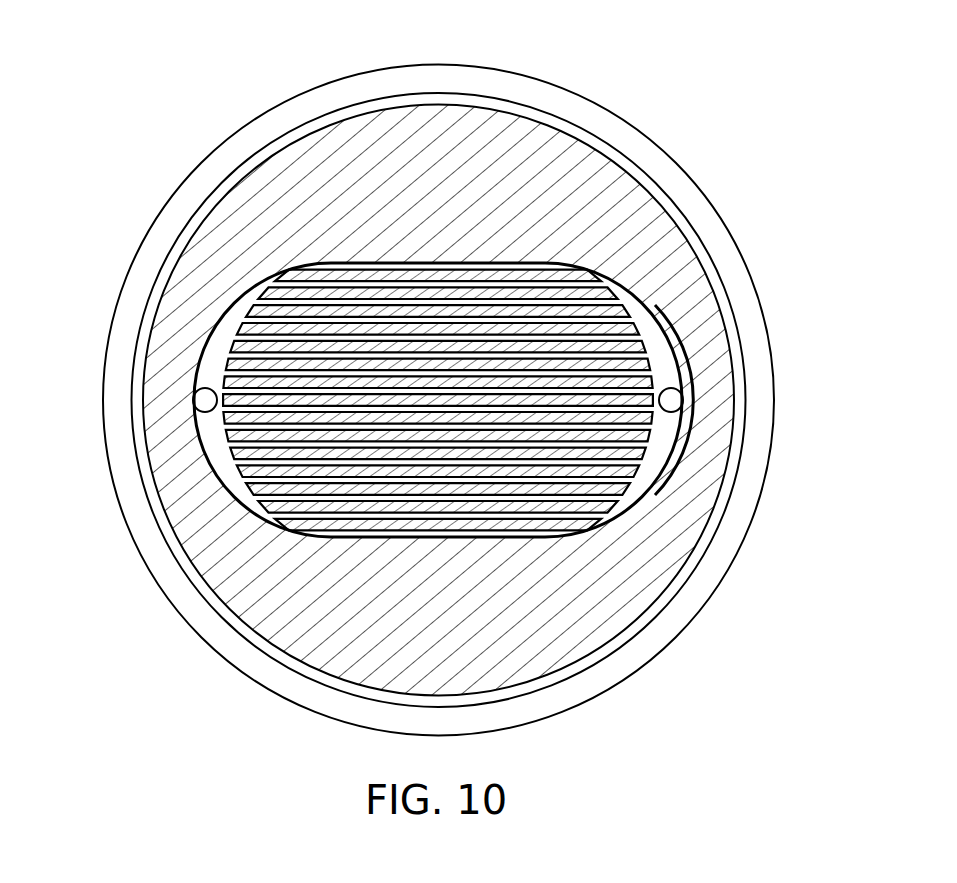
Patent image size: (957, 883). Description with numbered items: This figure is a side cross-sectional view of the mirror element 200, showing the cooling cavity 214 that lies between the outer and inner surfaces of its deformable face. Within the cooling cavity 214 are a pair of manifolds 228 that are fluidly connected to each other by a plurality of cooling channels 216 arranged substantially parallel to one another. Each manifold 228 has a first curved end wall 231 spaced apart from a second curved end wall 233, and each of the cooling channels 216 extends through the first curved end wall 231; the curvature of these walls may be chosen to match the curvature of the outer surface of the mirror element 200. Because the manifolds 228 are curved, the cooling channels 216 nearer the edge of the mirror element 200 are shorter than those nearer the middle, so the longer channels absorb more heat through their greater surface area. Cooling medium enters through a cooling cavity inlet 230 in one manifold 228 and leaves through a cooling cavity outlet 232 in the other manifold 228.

The mirror element 200 is at (670, 106).
The cooling cavity 214 is at (634, 281).
The cooling channels 216 is at (439, 326).
The manifolds 228 is at (213, 337).
The cooling cavity inlet 230 is at (203, 401).
The first curved end wall 231 is at (637, 473).
The cooling cavity outlet 232 is at (672, 398).
The second curved end wall 233 is at (677, 447).